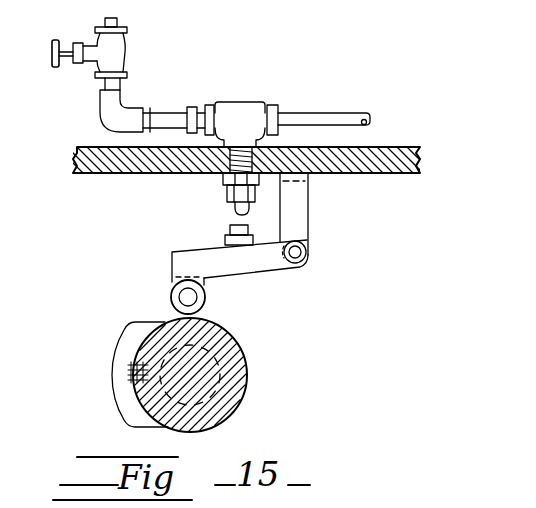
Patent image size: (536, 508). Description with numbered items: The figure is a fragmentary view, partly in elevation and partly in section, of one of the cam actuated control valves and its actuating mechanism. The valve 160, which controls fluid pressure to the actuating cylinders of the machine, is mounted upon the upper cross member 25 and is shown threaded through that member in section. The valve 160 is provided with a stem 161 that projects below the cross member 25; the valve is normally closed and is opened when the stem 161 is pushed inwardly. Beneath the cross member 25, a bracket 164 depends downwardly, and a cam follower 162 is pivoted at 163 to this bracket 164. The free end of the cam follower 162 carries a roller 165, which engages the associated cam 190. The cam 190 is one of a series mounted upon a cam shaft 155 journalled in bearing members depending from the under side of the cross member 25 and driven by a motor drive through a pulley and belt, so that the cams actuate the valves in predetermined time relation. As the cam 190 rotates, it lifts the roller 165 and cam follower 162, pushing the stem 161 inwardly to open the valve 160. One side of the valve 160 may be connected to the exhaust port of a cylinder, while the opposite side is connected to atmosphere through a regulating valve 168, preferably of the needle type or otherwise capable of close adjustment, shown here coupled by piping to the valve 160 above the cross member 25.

The upper cross member 25 is at (138, 174).
The cam shaft 155 is at (243, 350).
The valve 160 is at (238, 110).
The stem 161 is at (233, 212).
The cam follower 162 is at (247, 257).
The pivot 163 is at (307, 245).
The bracket 164 is at (300, 212).
The roller 165 is at (170, 295).
The regulating valve 168 is at (120, 52).
The cam 190 is at (123, 338).